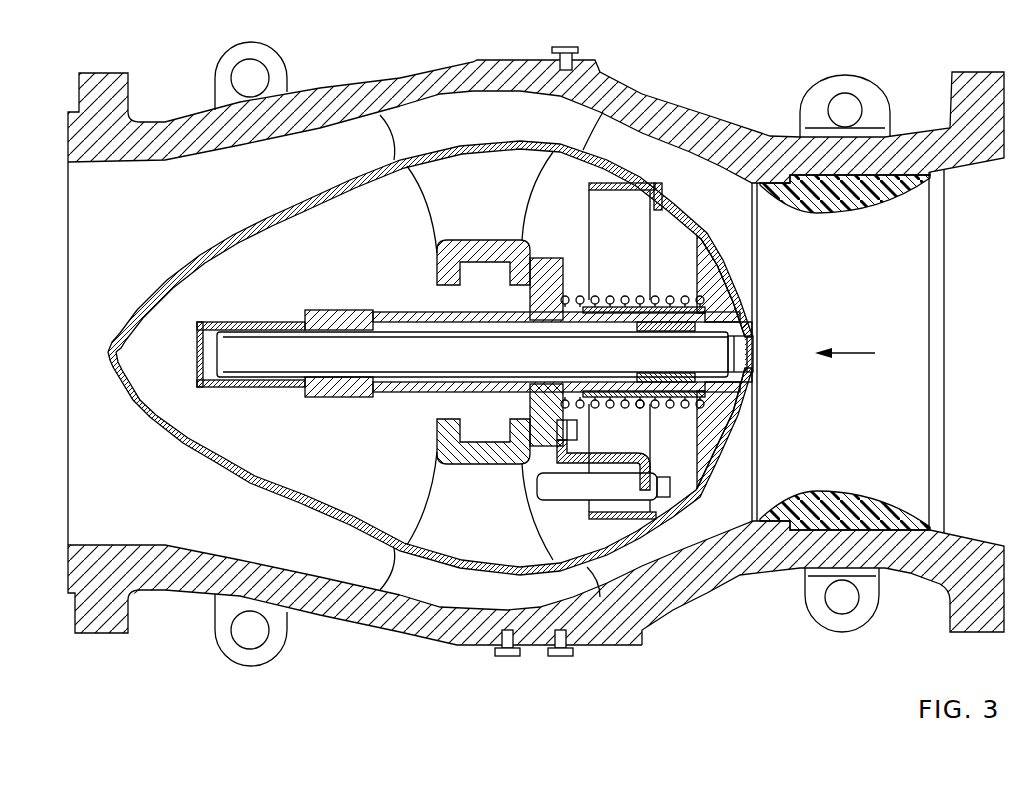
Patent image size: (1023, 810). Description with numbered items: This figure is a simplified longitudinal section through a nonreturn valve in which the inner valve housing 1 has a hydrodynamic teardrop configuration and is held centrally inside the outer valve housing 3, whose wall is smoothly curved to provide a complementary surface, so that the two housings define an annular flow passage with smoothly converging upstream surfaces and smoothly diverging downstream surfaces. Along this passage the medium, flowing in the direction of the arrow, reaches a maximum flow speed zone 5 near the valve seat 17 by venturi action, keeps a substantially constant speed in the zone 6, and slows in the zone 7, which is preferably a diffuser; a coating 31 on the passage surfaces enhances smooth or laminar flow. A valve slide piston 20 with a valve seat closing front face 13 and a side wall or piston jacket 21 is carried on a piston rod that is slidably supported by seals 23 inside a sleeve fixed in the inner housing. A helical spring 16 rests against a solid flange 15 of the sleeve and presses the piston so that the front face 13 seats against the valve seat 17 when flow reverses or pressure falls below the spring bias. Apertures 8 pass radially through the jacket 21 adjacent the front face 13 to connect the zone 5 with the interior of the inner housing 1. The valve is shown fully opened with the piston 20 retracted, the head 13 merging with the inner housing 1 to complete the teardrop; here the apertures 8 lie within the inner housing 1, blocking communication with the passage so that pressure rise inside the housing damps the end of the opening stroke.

The inner valve housing 1 is at (430, 354).
The outer valve housing 3 is at (536, 351).
The maximum flow speed zone 5 is at (710, 175).
The constant speed zone 6 is at (505, 108).
The diffuser zone 7 is at (213, 178).
The apertures 8 is at (655, 208).
The valve seat closing front face 13 is at (741, 308).
The solid flange 15 is at (553, 282).
The helical spring 16 is at (641, 408).
The valve seat 17 is at (870, 197).
The valve slide piston 20 is at (660, 274).
The piston jacket 21 is at (593, 520).
The seals 23 is at (340, 387).
The coating 31 is at (310, 578).